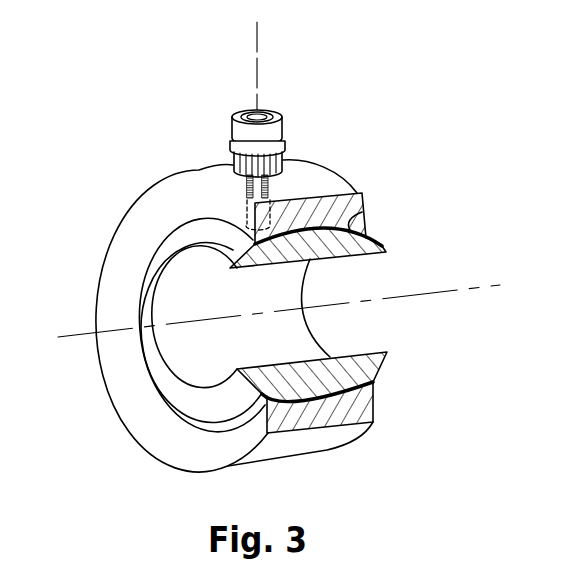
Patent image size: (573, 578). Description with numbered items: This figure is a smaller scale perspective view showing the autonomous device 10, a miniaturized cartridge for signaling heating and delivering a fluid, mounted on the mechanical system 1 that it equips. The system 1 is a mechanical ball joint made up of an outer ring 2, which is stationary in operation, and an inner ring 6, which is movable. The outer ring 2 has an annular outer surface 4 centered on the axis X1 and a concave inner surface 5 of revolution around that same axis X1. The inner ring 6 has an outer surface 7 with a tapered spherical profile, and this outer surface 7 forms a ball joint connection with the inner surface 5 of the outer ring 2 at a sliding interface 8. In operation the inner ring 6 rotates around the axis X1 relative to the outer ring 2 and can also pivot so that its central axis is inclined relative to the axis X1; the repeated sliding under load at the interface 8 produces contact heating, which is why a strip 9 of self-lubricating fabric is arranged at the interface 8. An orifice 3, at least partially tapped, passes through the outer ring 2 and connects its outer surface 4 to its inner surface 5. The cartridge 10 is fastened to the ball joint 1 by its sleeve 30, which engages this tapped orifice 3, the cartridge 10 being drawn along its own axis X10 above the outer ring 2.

The mechanical system 1 is at (62, 265).
The outer ring 2 is at (130, 215).
The orifice 3 is at (287, 188).
The annular outer surface 4 is at (305, 154).
The concave inner surface 5 is at (337, 376).
The inner ring 6 is at (186, 394).
The outer surface 7 is at (306, 410).
The sliding interface 8 is at (380, 234).
The strip of self-lubricating fabric 9 is at (362, 212).
The autonomous device 10 is at (277, 113).
The sleeve 30 is at (243, 184).
The axis X1 is at (296, 302).
The screw axis X10 is at (259, 57).